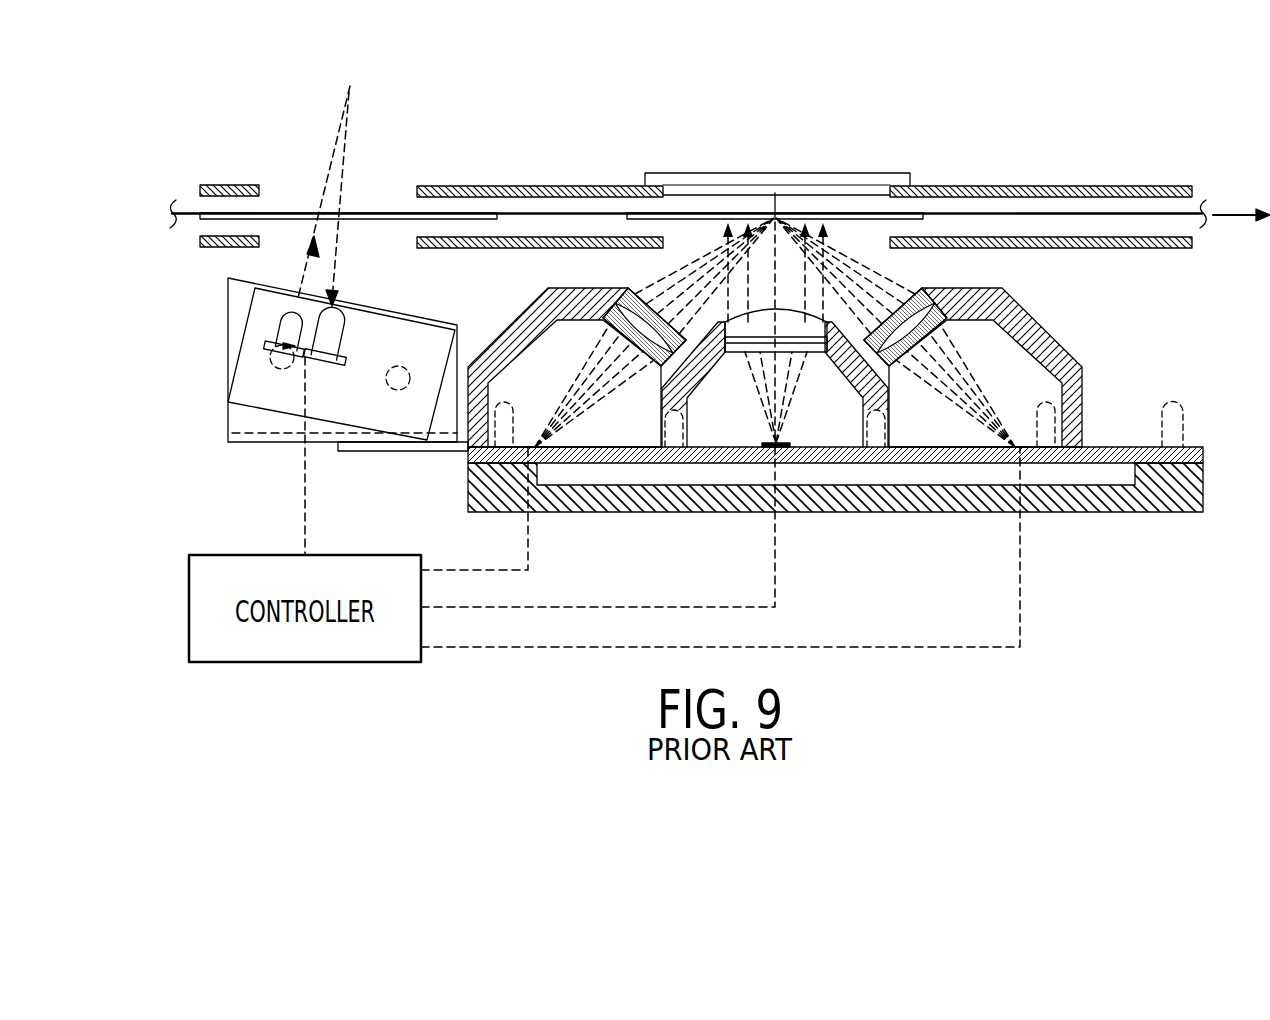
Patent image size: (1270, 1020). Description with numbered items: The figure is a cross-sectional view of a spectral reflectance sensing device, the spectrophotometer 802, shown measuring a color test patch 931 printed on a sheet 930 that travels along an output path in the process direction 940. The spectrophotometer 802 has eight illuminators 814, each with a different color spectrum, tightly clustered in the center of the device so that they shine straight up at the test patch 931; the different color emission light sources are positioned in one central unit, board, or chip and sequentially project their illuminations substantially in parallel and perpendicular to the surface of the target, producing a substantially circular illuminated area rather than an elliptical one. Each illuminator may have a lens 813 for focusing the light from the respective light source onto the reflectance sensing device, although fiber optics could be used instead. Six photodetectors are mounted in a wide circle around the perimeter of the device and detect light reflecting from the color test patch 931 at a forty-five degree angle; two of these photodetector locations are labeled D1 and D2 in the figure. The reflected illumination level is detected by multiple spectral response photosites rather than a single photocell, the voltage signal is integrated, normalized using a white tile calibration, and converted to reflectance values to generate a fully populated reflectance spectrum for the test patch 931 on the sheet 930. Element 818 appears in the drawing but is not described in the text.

The spectrophotometer 802 is at (1162, 339).
The lens 813 is at (807, 357).
The illuminators 814 is at (777, 447).
The illumination lens 818 is at (651, 292).
The sheet 930 is at (1051, 212).
The color test patch 931 is at (699, 220).
The process direction 940 is at (1237, 212).
The photodetector D1 is at (537, 447).
The photodetector D2 is at (1020, 447).